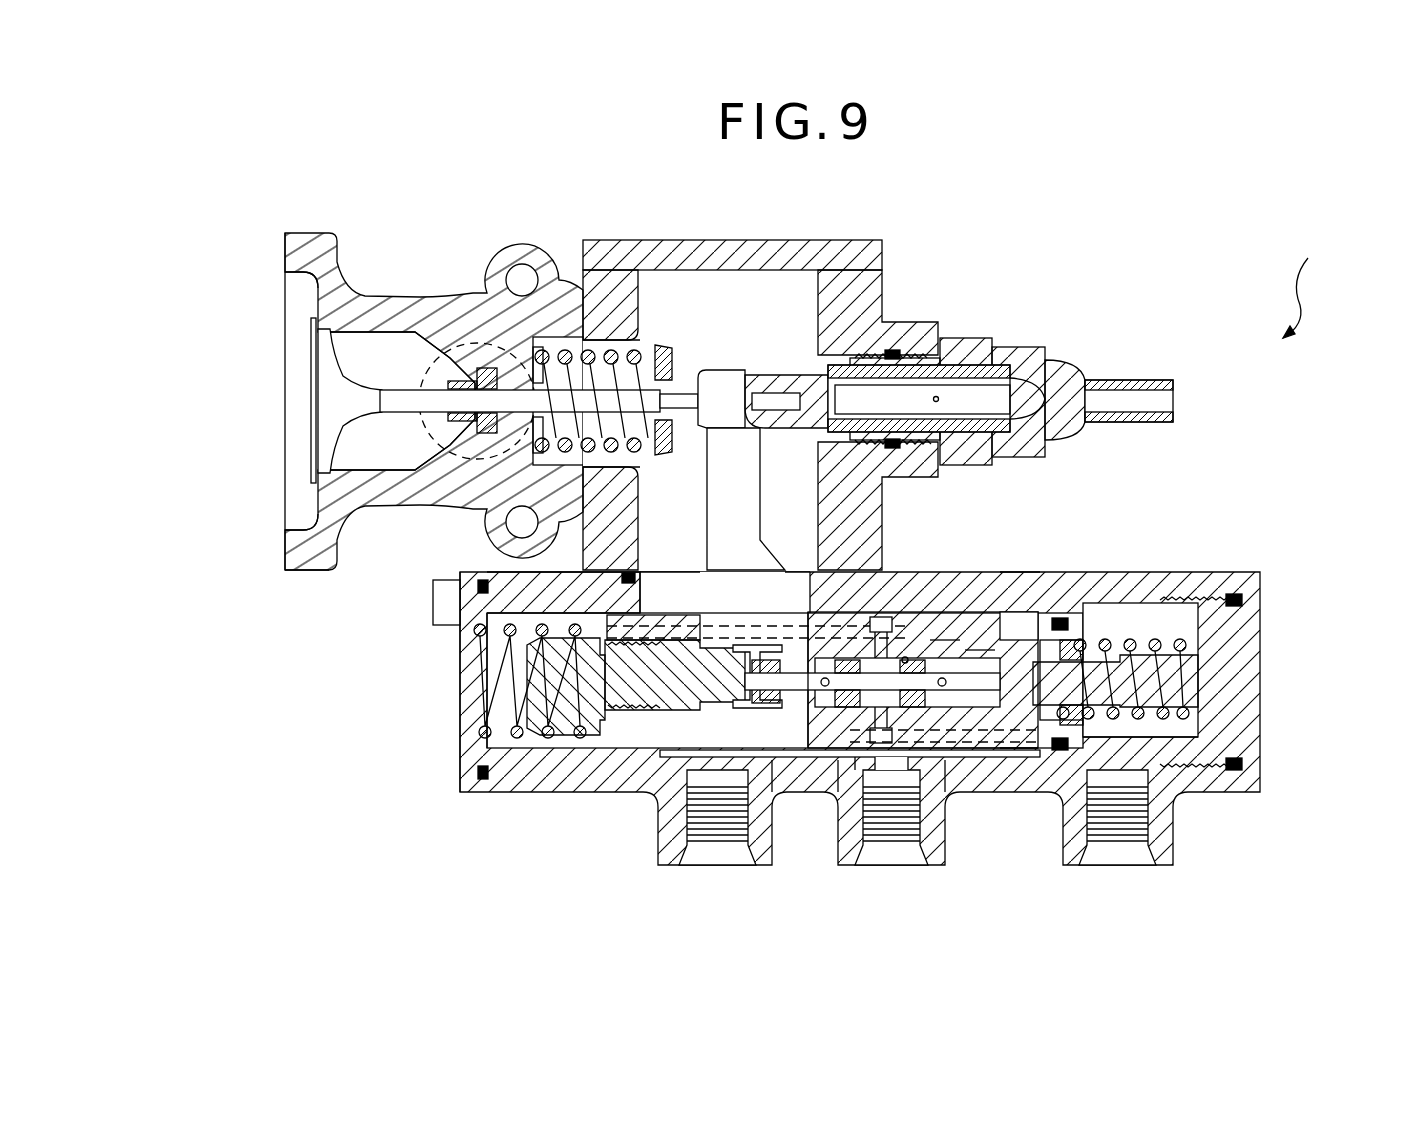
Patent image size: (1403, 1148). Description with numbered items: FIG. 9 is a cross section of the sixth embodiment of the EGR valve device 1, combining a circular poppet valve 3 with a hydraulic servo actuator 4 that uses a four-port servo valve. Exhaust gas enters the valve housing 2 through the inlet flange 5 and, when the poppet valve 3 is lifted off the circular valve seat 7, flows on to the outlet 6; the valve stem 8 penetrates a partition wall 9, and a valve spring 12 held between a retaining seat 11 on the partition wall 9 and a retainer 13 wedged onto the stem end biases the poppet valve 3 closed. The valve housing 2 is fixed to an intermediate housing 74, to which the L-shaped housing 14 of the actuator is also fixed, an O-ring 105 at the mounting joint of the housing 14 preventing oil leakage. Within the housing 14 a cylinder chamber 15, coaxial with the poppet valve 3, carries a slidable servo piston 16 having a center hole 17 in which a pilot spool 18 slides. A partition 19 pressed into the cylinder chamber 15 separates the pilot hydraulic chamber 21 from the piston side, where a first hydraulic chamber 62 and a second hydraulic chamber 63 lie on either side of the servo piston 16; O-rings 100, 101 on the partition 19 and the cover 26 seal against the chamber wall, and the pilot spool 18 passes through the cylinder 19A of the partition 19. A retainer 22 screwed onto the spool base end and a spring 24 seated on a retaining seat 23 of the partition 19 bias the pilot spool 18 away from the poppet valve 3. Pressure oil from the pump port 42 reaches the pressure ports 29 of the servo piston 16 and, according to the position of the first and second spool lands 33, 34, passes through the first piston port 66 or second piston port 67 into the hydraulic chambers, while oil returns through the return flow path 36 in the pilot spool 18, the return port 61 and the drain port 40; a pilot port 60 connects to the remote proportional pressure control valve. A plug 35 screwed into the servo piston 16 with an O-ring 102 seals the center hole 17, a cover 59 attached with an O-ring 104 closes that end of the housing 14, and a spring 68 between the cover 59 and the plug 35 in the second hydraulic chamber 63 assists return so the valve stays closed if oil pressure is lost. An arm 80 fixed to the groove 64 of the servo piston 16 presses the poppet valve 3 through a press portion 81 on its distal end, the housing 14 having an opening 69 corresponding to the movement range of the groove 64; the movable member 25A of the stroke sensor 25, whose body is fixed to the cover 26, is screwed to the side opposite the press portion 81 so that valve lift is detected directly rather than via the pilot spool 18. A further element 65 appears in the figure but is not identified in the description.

The EGR valve device 1 is at (1306, 286).
The valve housing 2 is at (425, 296).
The poppet valve 3 is at (285, 445).
The hydraulic servo actuator 4 is at (1137, 567).
The inlet flange 5 is at (305, 571).
The outlet 6 is at (428, 428).
The valve seat 7 is at (311, 477).
The valve stem 8 is at (376, 389).
The partition wall 9 is at (447, 356).
The retaining seat 11 is at (542, 350).
The valve spring 12 is at (640, 345).
The retainer 13 is at (665, 450).
The housing 14 is at (1020, 572).
The cylinder chamber 15 is at (1000, 748).
The servo piston 16 is at (838, 775).
The center hole 17 is at (680, 760).
The pilot spool 18 is at (968, 650).
The partition 19 is at (1052, 618).
The cylinder 19A is at (1045, 620).
The pilot hydraulic chamber 21 is at (1165, 740).
The retainer 22 is at (1198, 685).
The retaining seat 23 is at (1065, 725).
The spring 24 is at (1158, 645).
The stroke sensor 25 is at (1050, 352).
The movable member 25A is at (893, 350).
The cover 26 is at (1248, 622).
The pressure ports 29 is at (958, 750).
The first spool land 33 is at (890, 612).
The second spool land 34 is at (932, 640).
The plug 35 is at (560, 738).
The return flow path 36 is at (845, 700).
The drain port 40 is at (730, 866).
The pump port 42 is at (900, 866).
The cover 59 is at (460, 705).
The pilot port 60 is at (1118, 866).
The return port 61 is at (758, 645).
The first hydraulic chamber 62 is at (1012, 750).
The second hydraulic chamber 63 is at (492, 748).
The groove 64 is at (700, 628).
The passage 65 is at (773, 765).
The first piston port 66 is at (858, 770).
The second piston port 67 is at (907, 655).
The spring 68 is at (500, 655).
The opening 69 is at (641, 600).
The intermediate housing 74 is at (878, 285).
The arm 80 is at (752, 503).
The press portion 81 is at (700, 370).
The O-ring 100 is at (1068, 622).
The O-ring 101 is at (1233, 594).
The O-ring 102 is at (640, 712).
The O-ring 104 is at (478, 770).
The O-ring 105 is at (632, 572).